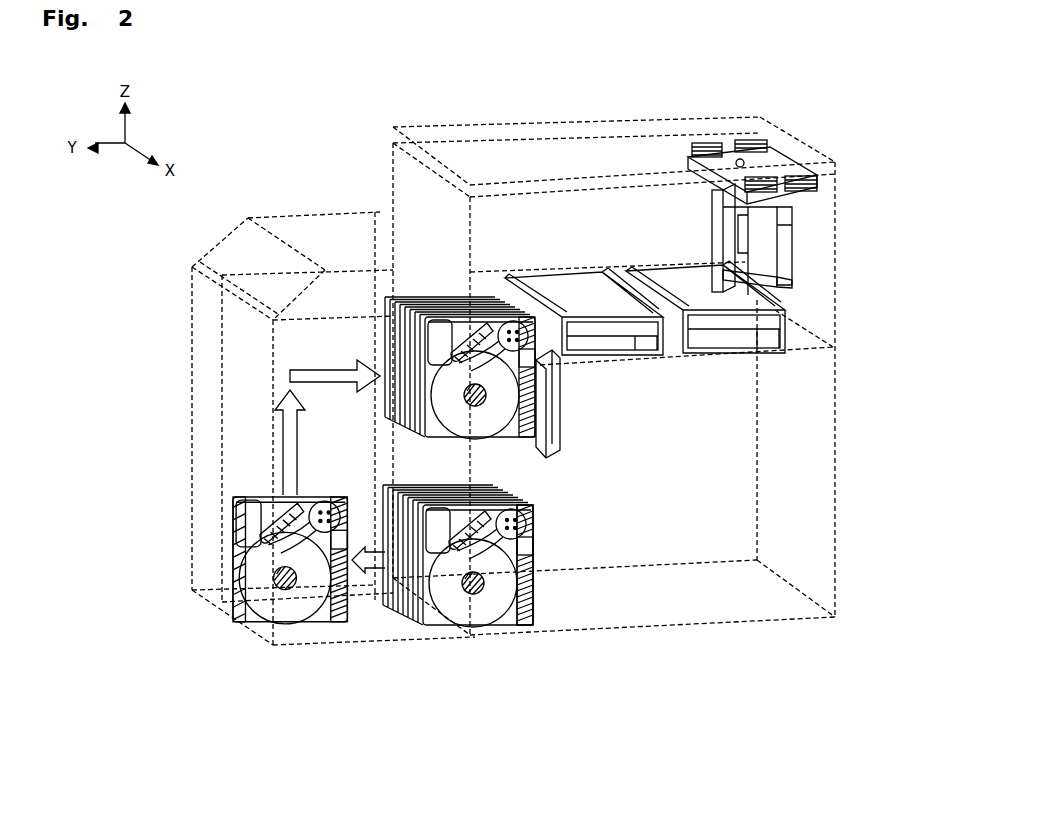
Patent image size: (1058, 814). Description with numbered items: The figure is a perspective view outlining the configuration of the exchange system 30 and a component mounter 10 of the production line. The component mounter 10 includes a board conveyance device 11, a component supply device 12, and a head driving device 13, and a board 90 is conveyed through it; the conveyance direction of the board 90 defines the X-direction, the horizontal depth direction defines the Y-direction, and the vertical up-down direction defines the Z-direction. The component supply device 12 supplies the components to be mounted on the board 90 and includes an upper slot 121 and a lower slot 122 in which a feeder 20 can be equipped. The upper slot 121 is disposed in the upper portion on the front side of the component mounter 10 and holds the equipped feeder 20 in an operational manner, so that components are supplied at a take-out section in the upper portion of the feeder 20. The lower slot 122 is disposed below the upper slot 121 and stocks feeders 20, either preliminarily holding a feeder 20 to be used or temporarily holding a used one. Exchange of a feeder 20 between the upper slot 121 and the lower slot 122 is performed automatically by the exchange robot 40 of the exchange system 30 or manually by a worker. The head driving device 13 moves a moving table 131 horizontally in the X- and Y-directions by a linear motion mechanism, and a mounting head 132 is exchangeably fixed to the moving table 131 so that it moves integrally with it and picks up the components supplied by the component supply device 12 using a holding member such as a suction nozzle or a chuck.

The component mounter 10 is at (541, 113).
The board conveyance device 11 is at (574, 260).
The component supply device 12 is at (441, 277).
The upper slot 121 is at (558, 438).
The lower slot 122 is at (546, 565).
The head driving device 13 is at (807, 174).
The moving table 131 is at (780, 234).
The mounting head 132 is at (735, 270).
The feeder 20 is at (436, 302).
The exchange system 30 is at (137, 258).
The exchange robot 40 is at (167, 332).
The board 90 is at (547, 290).